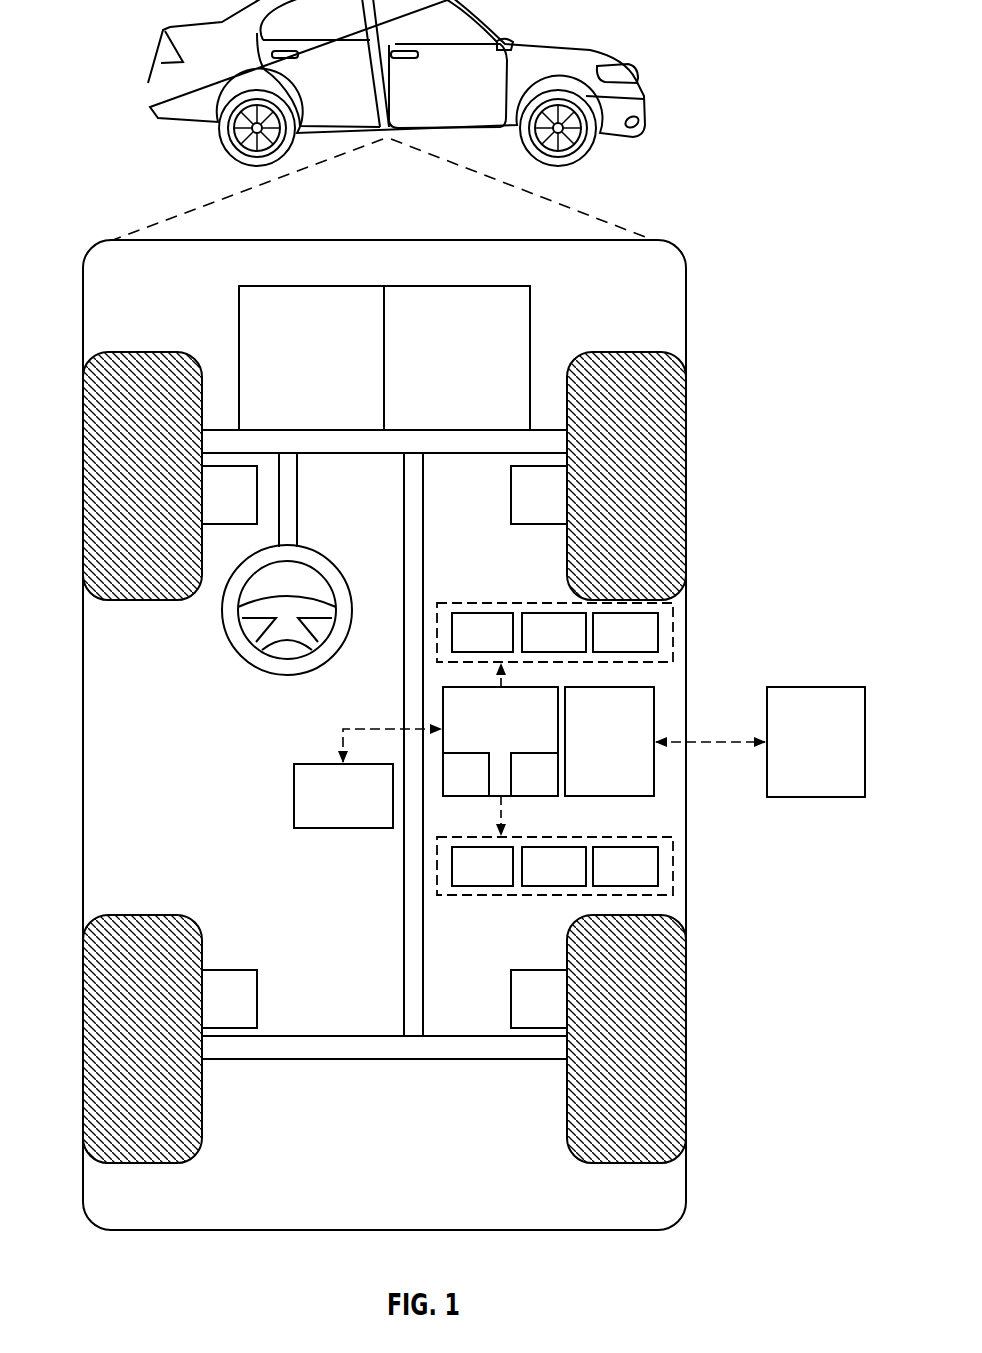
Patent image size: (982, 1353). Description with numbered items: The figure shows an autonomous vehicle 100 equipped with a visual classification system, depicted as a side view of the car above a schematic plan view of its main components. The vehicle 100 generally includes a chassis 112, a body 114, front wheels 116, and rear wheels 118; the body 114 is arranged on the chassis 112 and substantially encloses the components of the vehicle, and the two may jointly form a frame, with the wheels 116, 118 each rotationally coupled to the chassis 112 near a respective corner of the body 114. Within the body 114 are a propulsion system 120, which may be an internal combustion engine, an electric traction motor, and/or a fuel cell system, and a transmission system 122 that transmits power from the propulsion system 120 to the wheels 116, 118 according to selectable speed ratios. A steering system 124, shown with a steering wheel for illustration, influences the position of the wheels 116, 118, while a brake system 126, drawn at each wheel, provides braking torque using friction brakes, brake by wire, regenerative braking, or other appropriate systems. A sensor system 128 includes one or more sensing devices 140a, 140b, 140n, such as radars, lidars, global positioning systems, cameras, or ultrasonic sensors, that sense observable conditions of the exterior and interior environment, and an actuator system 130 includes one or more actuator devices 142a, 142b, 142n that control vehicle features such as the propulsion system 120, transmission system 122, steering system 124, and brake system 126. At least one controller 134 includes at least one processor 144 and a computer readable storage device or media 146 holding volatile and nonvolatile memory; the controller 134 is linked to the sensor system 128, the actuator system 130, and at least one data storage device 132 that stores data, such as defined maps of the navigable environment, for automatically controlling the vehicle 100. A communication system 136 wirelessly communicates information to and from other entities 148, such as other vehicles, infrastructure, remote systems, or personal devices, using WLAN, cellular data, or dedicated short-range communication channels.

The vehicle 100 is at (150, 60).
The chassis 112 is at (404, 883).
The body 114 is at (84, 700).
The front wheels 116 is at (153, 352).
The rear wheels 118 is at (160, 1163).
The propulsion system 120 is at (290, 375).
The transmission system 122 is at (436, 375).
The steering system 124 is at (307, 526).
The brake system 126 is at (210, 509).
The sensor system 128 is at (554, 615).
The actuator system 130 is at (555, 886).
The data storage device 132 is at (322, 811).
The controller 134 is at (480, 738).
The communication system 136 is at (588, 758).
The sensing device 140a is at (509, 646).
The sensing device 140b is at (527, 646).
The sensing device 140n is at (598, 646).
The actuator device 142a is at (509, 881).
The actuator device 142b is at (527, 881).
The actuator device 142n is at (598, 881).
The processor 144 is at (446, 789).
The computer readable storage device or media 146 is at (515, 789).
The other entities 148 is at (795, 758).